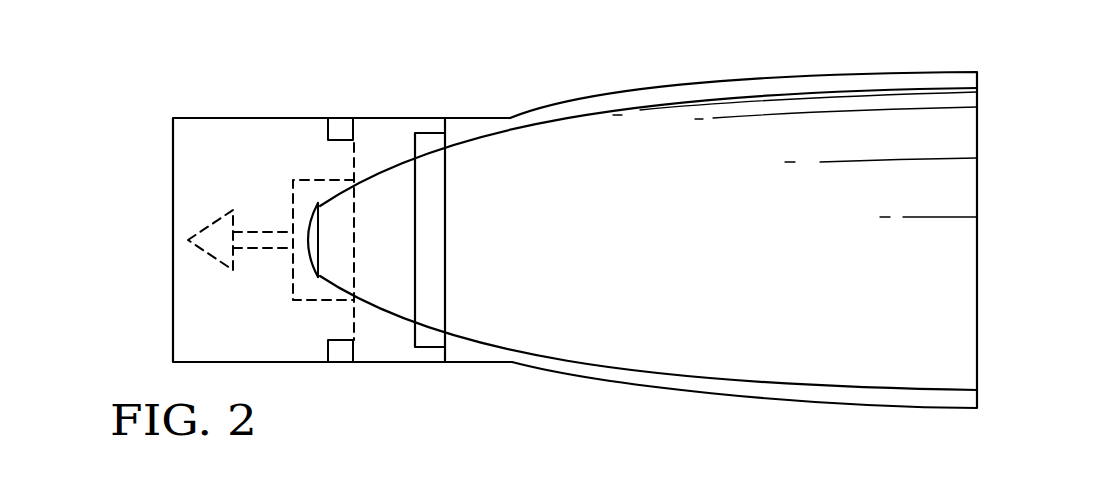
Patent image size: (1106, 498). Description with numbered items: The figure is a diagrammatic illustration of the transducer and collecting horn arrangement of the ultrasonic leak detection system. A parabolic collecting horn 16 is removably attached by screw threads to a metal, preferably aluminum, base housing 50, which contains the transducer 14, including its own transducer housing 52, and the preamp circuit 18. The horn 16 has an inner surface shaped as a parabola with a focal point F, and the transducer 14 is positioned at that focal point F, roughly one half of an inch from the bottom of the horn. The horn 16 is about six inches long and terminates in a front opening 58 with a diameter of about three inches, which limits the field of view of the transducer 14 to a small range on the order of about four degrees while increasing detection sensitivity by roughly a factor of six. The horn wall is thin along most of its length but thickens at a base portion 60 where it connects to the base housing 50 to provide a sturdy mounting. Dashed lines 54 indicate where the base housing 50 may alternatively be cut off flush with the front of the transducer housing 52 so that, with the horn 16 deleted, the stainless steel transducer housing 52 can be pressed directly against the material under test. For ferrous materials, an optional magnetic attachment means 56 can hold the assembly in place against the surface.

The transducer 14 is at (318, 246).
The parabolic collecting horn 16 is at (845, 78).
The preamp circuit 18 is at (225, 240).
The base housing 50 is at (200, 128).
The transducer housing 52 is at (307, 180).
The dashed lines 54 is at (357, 153).
The magnetic attachment means 56 is at (338, 125).
The front opening 58 is at (963, 257).
The base portion 60 is at (463, 123).
The focal point F is at (331, 238).